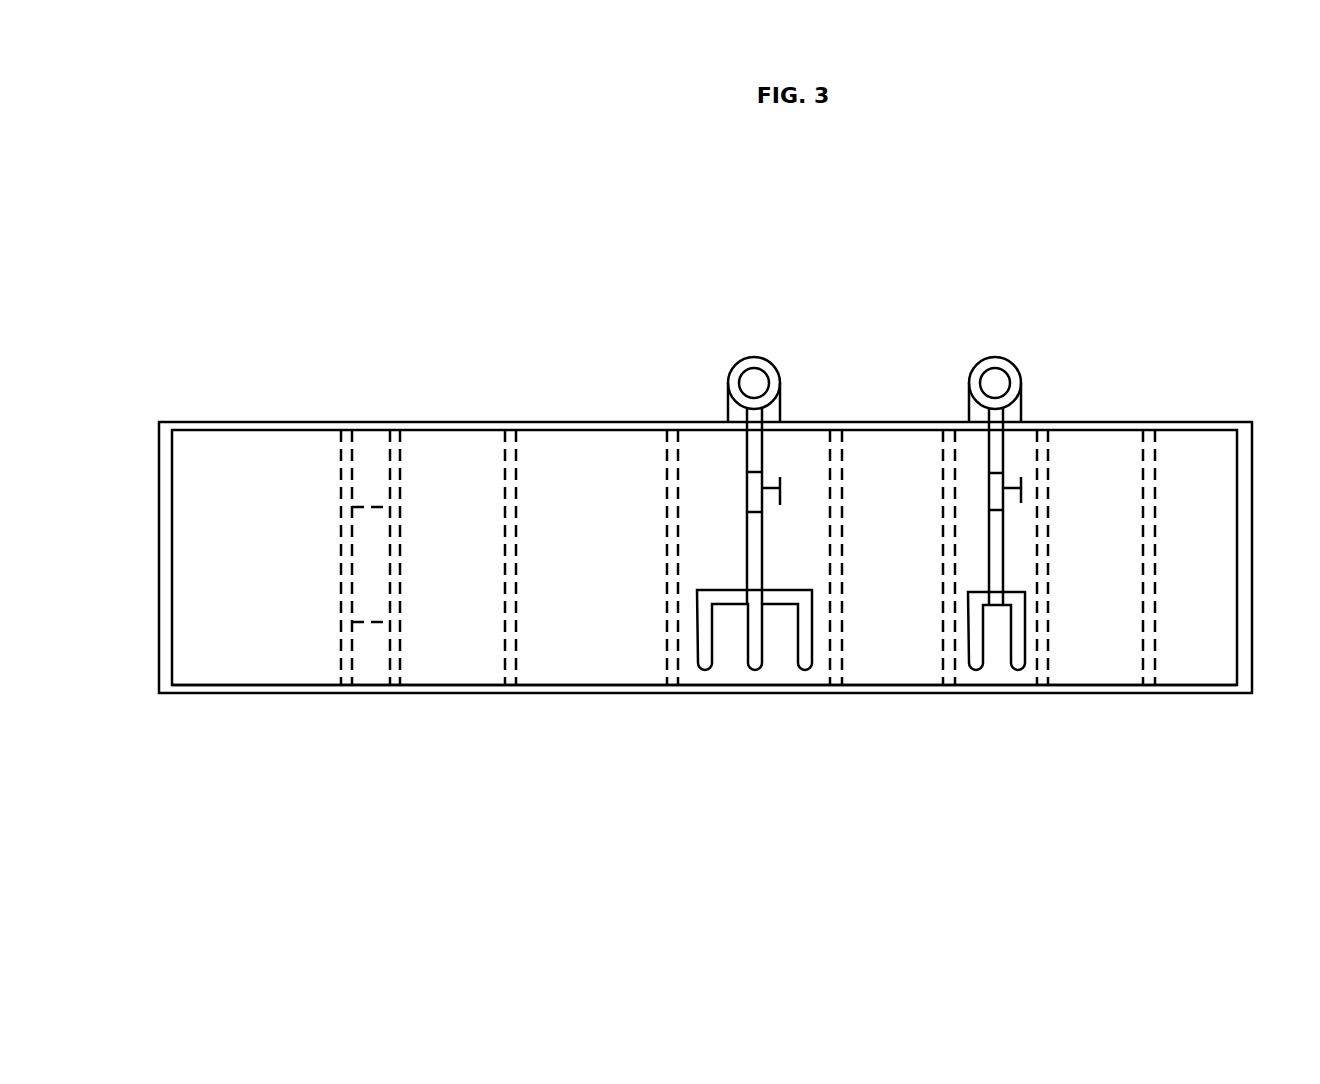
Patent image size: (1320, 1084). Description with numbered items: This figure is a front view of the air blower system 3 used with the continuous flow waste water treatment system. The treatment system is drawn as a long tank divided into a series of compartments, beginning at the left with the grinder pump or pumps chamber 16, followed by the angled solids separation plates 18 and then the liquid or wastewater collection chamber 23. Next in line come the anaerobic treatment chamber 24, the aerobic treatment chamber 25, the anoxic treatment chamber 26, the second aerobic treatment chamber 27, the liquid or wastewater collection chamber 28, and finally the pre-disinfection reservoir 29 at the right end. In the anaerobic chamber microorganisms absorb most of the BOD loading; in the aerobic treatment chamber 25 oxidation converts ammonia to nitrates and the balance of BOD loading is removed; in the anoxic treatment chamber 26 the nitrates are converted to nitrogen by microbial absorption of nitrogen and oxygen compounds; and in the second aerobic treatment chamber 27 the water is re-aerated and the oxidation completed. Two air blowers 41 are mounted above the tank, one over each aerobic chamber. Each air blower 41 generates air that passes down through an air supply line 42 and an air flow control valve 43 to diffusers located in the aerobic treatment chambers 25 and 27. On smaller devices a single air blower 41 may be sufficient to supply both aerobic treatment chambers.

The air blower system front view 3 is at (134, 631).
The grinder pump chamber 16 is at (259, 448).
The angled solids separation plates 18 is at (372, 507).
The liquid or wastewater collection chamber 23 is at (430, 450).
The anaerobic treatment chamber 24 is at (592, 450).
The aerobic treatment chamber 25 is at (708, 432).
The anoxic treatment chamber 26 is at (892, 435).
The aerobic treatment chamber 27 is at (995, 693).
The liquid or wastewater collection chamber 28 is at (1096, 438).
The pre-disinfection reservoir 29 is at (1195, 437).
The air blowers 41 is at (754, 357).
The air supply line 42 is at (760, 448).
The air flow control valves 43 is at (745, 495).